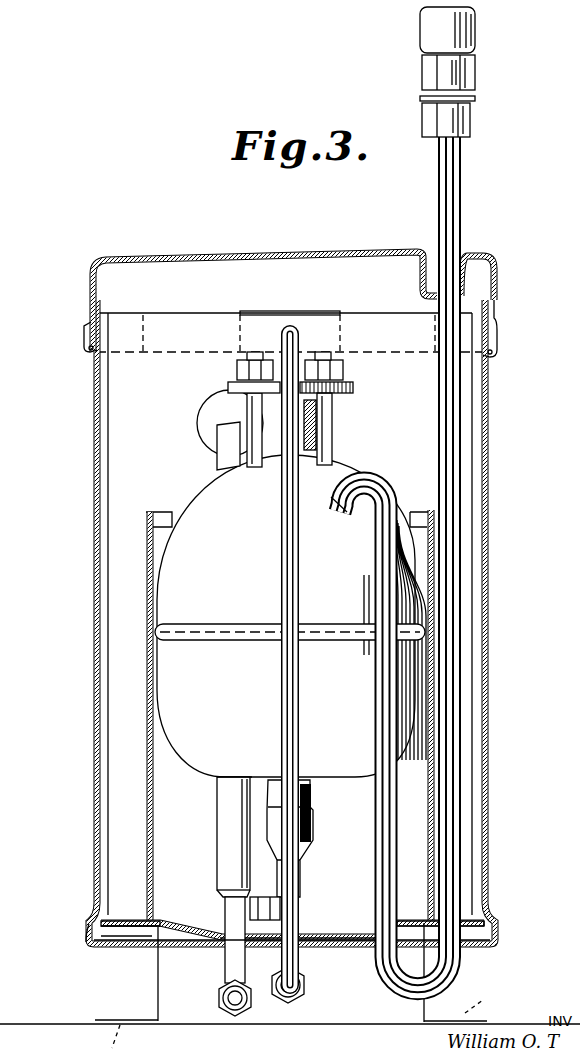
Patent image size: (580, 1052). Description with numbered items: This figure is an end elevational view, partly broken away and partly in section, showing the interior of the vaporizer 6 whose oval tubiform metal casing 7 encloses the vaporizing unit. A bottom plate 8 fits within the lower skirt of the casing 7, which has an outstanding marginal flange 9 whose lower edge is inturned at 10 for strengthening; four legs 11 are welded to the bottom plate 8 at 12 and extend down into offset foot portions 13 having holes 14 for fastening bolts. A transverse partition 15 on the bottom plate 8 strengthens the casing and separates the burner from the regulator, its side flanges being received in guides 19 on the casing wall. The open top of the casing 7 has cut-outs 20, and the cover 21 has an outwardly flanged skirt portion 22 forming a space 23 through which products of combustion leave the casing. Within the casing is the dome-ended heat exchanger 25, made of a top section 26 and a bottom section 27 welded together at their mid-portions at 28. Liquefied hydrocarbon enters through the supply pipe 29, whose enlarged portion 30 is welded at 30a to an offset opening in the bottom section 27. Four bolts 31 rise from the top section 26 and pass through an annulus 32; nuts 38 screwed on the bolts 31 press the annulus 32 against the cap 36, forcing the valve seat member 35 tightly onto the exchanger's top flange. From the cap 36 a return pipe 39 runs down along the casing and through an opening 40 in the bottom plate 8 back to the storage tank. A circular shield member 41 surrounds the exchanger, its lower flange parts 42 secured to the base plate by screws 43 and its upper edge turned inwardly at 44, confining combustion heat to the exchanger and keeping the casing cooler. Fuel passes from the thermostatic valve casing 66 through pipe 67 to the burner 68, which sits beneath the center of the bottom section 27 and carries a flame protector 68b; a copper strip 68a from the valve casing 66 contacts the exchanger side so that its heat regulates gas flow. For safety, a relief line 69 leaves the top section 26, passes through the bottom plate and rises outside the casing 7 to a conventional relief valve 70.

The vaporizer 6 is at (428, 432).
The casing 7 is at (101, 312).
The bottom plate 8 is at (404, 920).
The marginal flange 9 is at (85, 925).
The inturned edge 10 is at (88, 946).
The legs 11 is at (158, 992).
The leg attachment point 12 is at (165, 924).
The offset foot portions 13 is at (160, 1025).
The holes 14 is at (301, 1018).
The transverse partition 15 is at (126, 575).
The guides 19 is at (108, 517).
The cut-outs 20 is at (243, 350).
The cover 21 is at (326, 250).
The flanged skirt portion 22 is at (84, 330).
The space 23 is at (90, 352).
The heat exchanger 25 is at (345, 569).
The top section 26 is at (350, 470).
The bottom section 27 is at (410, 748).
The weld joint 28 is at (160, 633).
The supply pipe 29 is at (225, 962).
The enlarged portion 30 is at (216, 856).
The weld 30a is at (216, 781).
The bolts 31 is at (247, 412).
The annulus 32 is at (353, 388).
The valve seat member 35 is at (316, 420).
The cap 36 is at (270, 358).
The nuts 38 is at (237, 370).
The return pipe 39 is at (300, 333).
The opening 40 is at (303, 932).
The shield member 41 is at (146, 770).
The flange parts 42 is at (112, 916).
The screws 43 is at (125, 928).
The inturned upper edge 44 is at (158, 512).
The thermostatic valve casing 66 is at (213, 405).
The pipe 67 is at (268, 895).
The burner 68 is at (314, 805).
The copper strip 68a is at (226, 445).
The flame protector 68b is at (302, 790).
The relief line 69 is at (462, 200).
The relief valve 70 is at (476, 44).